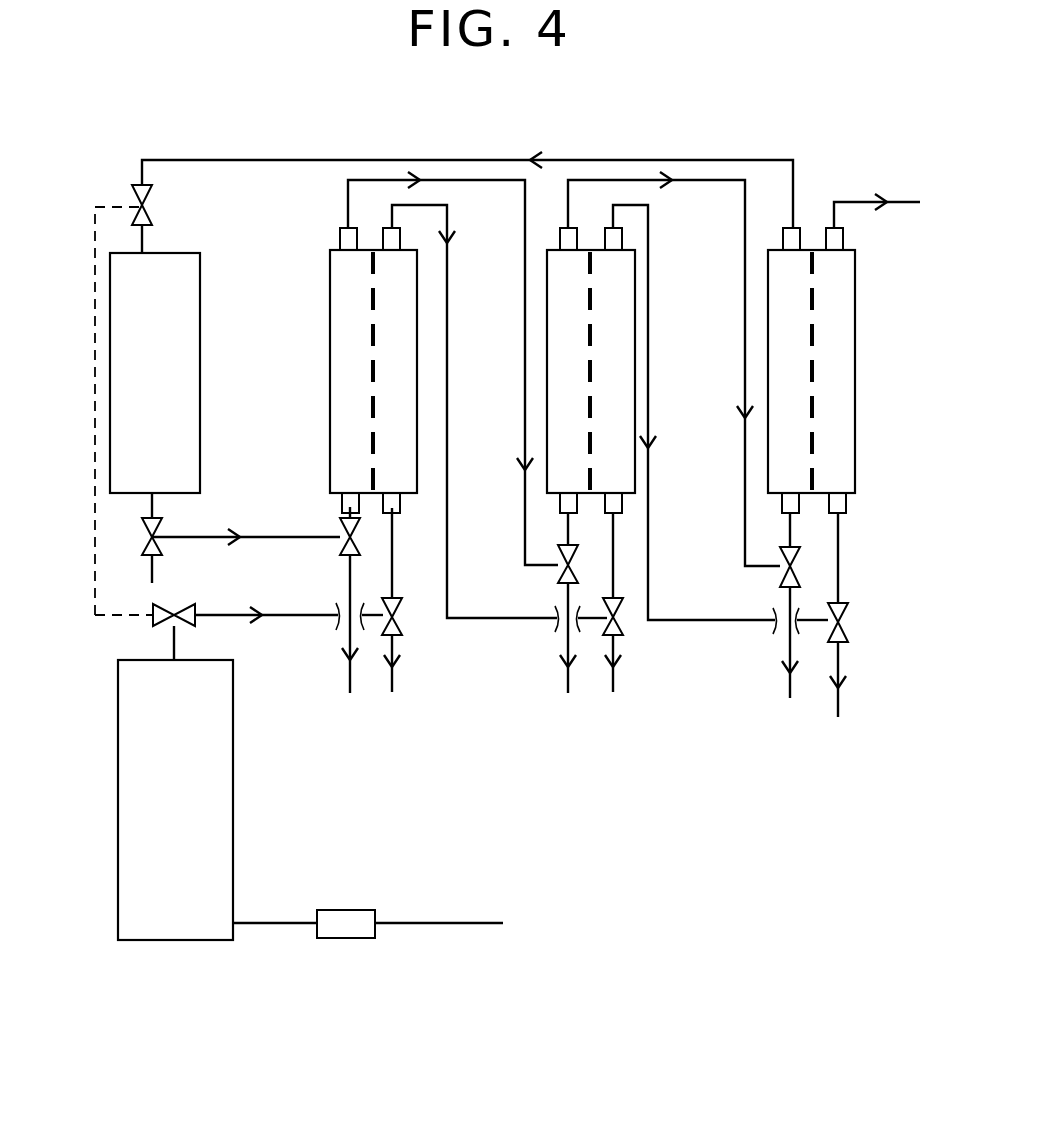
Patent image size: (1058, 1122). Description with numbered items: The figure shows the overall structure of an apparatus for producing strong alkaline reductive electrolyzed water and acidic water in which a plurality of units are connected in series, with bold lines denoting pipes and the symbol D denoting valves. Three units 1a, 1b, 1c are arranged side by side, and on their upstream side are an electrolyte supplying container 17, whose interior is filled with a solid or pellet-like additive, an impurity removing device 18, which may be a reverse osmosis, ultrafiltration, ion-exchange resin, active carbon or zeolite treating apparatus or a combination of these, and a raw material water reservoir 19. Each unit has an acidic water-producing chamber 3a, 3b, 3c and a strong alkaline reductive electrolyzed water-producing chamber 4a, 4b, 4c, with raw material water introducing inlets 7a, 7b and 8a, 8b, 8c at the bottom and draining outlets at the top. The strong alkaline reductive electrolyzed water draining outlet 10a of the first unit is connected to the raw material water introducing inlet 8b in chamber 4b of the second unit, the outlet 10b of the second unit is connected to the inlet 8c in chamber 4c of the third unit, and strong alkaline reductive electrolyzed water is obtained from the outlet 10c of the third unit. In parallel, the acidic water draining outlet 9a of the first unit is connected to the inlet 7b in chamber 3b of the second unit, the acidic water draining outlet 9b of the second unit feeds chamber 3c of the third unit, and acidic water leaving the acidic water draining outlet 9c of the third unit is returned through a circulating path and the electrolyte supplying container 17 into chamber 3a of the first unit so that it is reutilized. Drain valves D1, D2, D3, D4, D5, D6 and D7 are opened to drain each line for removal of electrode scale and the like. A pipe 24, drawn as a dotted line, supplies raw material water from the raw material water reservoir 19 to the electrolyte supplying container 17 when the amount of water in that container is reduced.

The unit 1a is at (373, 320).
The unit 1b is at (592, 318).
The unit 1c is at (809, 321).
The acidic water-producing chamber 3a is at (340, 397).
The acidic water-producing chamber 3b is at (560, 382).
The acidic water-producing chamber 3c is at (780, 370).
The strong alkaline reductive electrolyzed water-producing chamber 4a is at (393, 348).
The strong alkaline reductive electrolyzed water-producing chamber 4b is at (620, 386).
The strong alkaline reductive electrolyzed water-producing chamber 4c is at (845, 400).
The raw material water introducing inlet 7a is at (342, 503).
The raw material water introducing inlet 7b is at (560, 503).
The raw material water introducing inlet 8a is at (400, 500).
The raw material water introducing inlet 8b is at (622, 500).
The raw material water introducing inlet 8c is at (782, 503).
The acidic water draining outlet 9a is at (340, 236).
The acidic water draining outlet 9b is at (560, 245).
The acidic water draining outlet 9c is at (783, 244).
The strong alkaline reductive electrolyzed water draining outlet 10a is at (383, 235).
The strong alkaline reductive electrolyzed water draining outlet 10b is at (605, 236).
The strong alkaline reductive electrolyzed water draining outlet 10c is at (826, 236).
The electrolyte supplying container 17 is at (118, 280).
The impurity removing device 18 is at (340, 918).
The raw material water reservoir 19 is at (217, 773).
The pipe 24 is at (95, 545).
The drain valve D1 is at (157, 545).
The drain valve D2 is at (345, 550).
The drain valve D3 is at (400, 630).
The drain valve D4 is at (560, 576).
The drain valve D5 is at (622, 632).
The drain valve D6 is at (780, 578).
The drain valve D7 is at (847, 634).